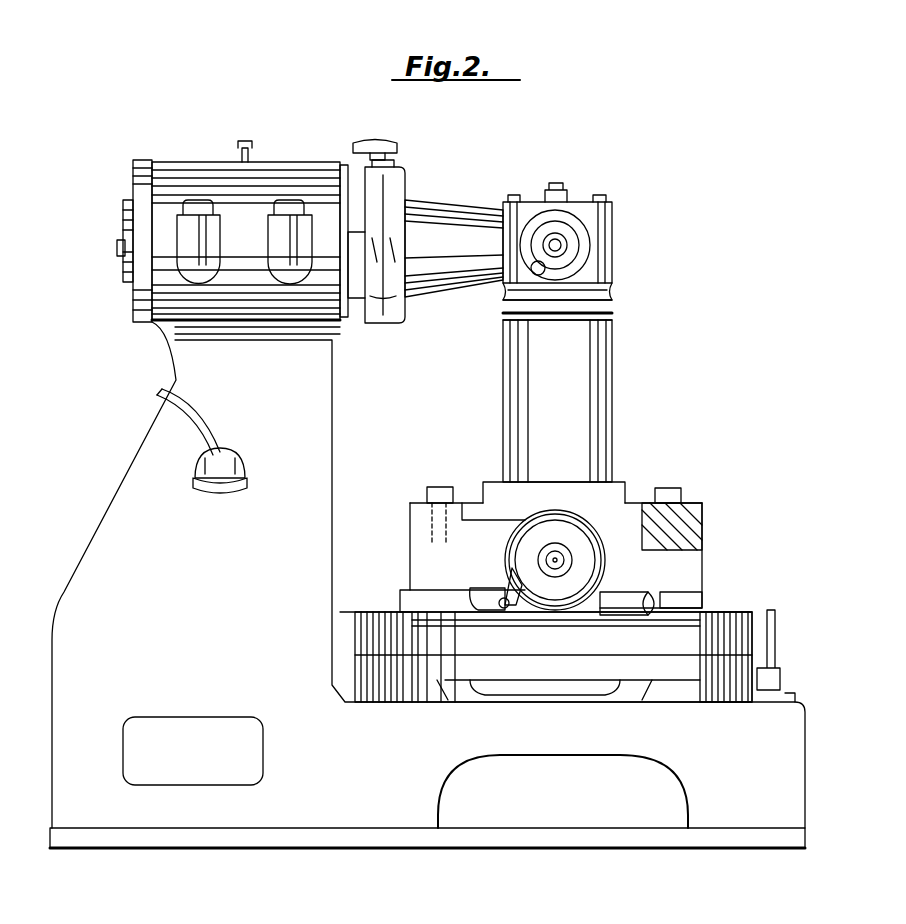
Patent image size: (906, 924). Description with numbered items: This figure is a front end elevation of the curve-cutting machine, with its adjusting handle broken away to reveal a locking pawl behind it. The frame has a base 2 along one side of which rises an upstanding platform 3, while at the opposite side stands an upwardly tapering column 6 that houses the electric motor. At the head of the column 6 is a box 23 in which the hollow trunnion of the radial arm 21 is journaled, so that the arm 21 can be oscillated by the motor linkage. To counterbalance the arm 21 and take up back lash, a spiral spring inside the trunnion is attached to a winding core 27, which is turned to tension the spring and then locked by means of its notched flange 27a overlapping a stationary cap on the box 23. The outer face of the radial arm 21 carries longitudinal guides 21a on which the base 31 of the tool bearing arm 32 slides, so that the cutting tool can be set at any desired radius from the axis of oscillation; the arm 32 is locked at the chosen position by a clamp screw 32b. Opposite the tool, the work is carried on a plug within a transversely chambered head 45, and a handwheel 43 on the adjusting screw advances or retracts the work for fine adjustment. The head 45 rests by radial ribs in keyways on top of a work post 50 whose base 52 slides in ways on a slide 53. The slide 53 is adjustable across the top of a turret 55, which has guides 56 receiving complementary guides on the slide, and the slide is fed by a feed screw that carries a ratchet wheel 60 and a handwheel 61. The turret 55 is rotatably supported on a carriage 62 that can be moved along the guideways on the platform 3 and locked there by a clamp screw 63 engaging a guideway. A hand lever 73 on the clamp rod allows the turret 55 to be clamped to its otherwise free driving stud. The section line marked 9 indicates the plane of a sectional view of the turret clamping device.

The base 2 is at (252, 845).
The platform 3 is at (78, 885).
The column 6 is at (318, 448).
The section line 9 is at (352, 595).
The radial arm 21 is at (372, 208).
The guides 21a is at (383, 300).
The box 23 is at (168, 173).
The core 27 is at (125, 215).
The notched flange 27a is at (122, 247).
The base of tool bearing arm 31 is at (385, 182).
The tool bearing arm 32 is at (443, 215).
The clamp screw 32b is at (380, 137).
The handwheel 43 is at (575, 248).
The head 45 is at (612, 298).
The work post 50 is at (585, 387).
The base of work post 52 is at (613, 512).
The slide 53 is at (690, 556).
The turret 55 is at (727, 628).
The guides 56 is at (667, 598).
The ratchet wheel 60 is at (520, 578).
The handwheel 61 is at (582, 565).
The carriage 62 is at (416, 690).
The clamp screw 63 is at (765, 683).
The hand lever 73 is at (650, 605).